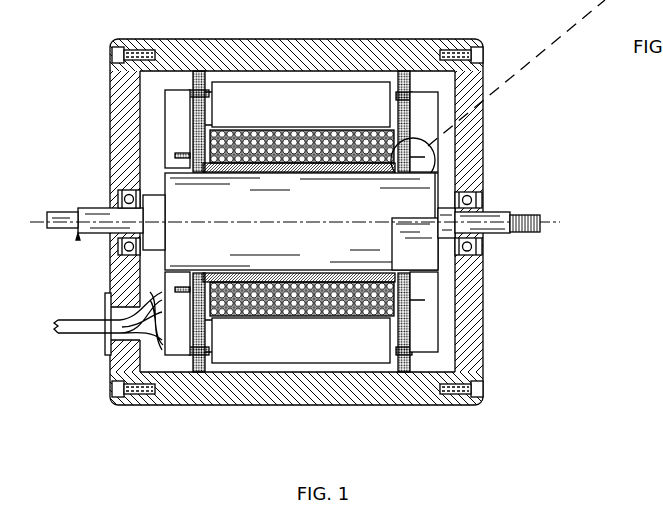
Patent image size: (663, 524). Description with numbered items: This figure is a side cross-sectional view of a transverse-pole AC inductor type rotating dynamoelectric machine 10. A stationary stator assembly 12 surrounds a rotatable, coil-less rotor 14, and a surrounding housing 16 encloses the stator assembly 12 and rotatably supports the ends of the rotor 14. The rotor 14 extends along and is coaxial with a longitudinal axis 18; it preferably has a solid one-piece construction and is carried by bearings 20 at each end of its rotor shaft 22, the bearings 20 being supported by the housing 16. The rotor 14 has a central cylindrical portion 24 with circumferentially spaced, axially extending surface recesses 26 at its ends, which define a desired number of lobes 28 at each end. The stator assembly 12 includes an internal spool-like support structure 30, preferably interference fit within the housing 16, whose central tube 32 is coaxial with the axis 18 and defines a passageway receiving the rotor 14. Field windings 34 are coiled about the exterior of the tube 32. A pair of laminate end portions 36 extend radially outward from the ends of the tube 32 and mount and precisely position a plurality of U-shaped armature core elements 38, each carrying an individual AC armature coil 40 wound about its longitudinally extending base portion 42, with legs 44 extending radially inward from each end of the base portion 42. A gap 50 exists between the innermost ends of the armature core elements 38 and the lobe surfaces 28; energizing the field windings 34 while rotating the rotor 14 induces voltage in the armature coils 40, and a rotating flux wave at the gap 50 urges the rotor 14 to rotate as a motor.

The dynamoelectric machine 10 is at (604, 417).
The stator assembly 12 is at (150, 98).
The rotor 14 is at (301, 221).
The housing 16 is at (270, 47).
The longitudinal axis 18 is at (563, 226).
The bearings 20 is at (120, 196).
The rotor shaft 22 is at (505, 235).
The central cylindrical portion 24 is at (228, 203).
The surface recesses 26 is at (415, 244).
The lobes 28 is at (442, 193).
The stator support structure 30 is at (190, 70).
The tube 32 is at (192, 156).
The field windings 34 is at (388, 303).
The laminate end portions 36 is at (405, 70).
The armature core elements 38 is at (433, 364).
The armature coil 40 is at (305, 355).
The base portion 42 is at (212, 367).
The legs 44 is at (165, 300).
The gap 50 is at (162, 169).